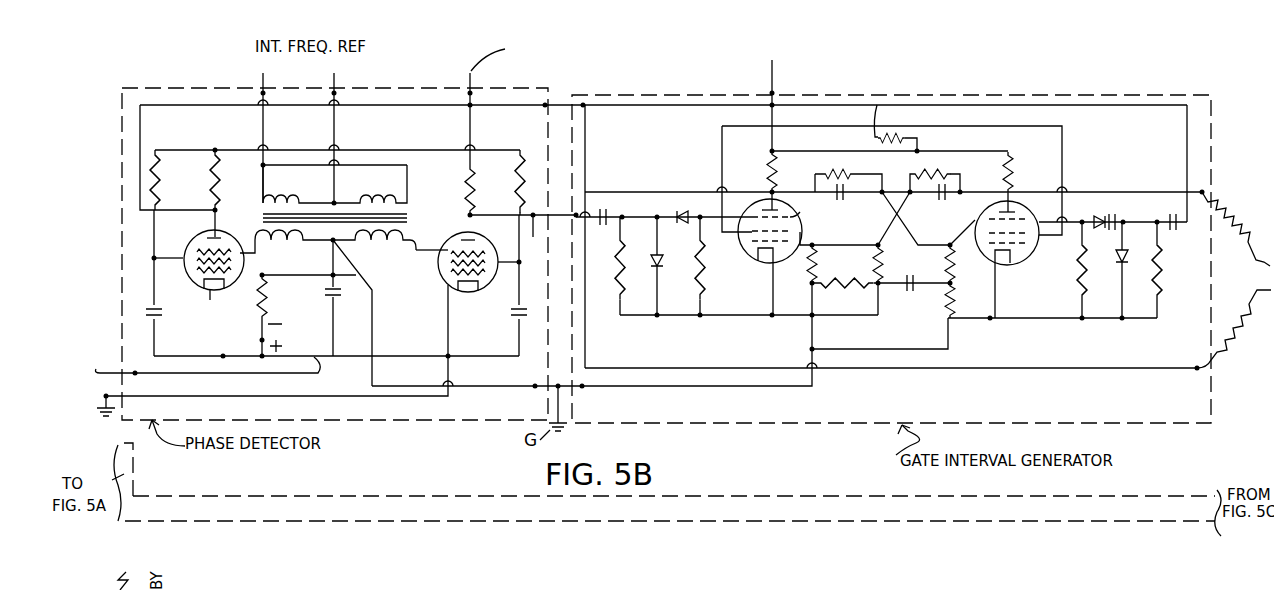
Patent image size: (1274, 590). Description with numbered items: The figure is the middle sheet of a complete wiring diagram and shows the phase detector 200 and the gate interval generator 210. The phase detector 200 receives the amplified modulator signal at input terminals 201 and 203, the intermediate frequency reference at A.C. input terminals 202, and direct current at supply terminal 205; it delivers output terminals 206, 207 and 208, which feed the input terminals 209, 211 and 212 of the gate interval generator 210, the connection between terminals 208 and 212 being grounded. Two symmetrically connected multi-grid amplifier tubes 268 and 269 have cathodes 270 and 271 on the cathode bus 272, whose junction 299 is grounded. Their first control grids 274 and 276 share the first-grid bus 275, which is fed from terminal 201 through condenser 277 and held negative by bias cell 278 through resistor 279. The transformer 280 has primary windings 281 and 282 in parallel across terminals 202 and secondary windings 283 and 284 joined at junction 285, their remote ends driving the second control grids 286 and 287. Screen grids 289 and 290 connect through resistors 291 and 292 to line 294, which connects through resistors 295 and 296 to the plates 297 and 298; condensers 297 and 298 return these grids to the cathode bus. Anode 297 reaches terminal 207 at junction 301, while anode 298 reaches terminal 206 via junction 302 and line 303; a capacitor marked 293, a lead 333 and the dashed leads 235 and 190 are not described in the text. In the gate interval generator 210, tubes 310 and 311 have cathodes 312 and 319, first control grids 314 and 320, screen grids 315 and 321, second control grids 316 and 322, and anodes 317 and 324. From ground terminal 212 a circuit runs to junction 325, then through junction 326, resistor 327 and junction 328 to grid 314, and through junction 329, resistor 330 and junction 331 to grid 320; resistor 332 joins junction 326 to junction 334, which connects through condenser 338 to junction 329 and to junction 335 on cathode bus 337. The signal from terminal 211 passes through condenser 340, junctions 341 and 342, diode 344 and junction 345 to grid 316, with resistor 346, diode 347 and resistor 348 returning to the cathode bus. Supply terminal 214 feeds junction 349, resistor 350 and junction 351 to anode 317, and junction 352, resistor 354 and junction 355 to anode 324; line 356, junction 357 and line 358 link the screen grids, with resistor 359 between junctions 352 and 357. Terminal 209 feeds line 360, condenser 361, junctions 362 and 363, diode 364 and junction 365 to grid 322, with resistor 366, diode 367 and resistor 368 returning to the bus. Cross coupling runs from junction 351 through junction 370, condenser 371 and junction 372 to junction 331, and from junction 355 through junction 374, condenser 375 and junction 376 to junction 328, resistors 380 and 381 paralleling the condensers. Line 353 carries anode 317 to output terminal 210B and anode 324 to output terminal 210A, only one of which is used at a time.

The phase detector 200 is at (457, 425).
The gate interval generator 210 is at (637, 425).
The input terminal 201 is at (138, 375).
The input terminal 203 is at (148, 396).
The A.C. input terminals 202 is at (265, 82).
The supply terminal 205 is at (473, 92).
The alternate output terminal 206 is at (544, 108).
The output terminal 207 is at (540, 232).
The output terminal 208 is at (536, 388).
The input terminal 209 is at (586, 110).
The signal input terminal 211 is at (599, 230).
The ground terminal 212 is at (584, 388).
The supply terminal 214 is at (770, 92).
The multi-grid amplifier tube 268 is at (180, 308).
The multi-grid amplifier tube 269 is at (452, 286).
The cathode 270 is at (204, 286).
The cathode 271 is at (466, 289).
The cathode bus 272 is at (320, 358).
The first control grid 274 is at (228, 276).
The first-grid bus 275 is at (306, 316).
The control grid 276 is at (440, 278).
The condenser 277 is at (347, 315).
The bias cell 278 is at (260, 340).
The resistor 279 is at (260, 318).
The transformer 280 is at (406, 218).
The primary winding 281 is at (378, 193).
The primary winding 282 is at (302, 193).
The secondary winding 283 is at (374, 246).
The secondary winding 284 is at (294, 246).
The junction 285 is at (347, 312).
The second control grid 286 is at (440, 254).
The second control grid 287 is at (232, 252).
The screen grid 289 is at (490, 278).
The screen grid 290 is at (196, 248).
The resistor 291 is at (520, 208).
The resistor 292 is at (160, 176).
The capacitor 293 is at (139, 328).
The line 294 is at (242, 150).
The resistor 295 is at (474, 184).
The resistor 296 is at (220, 188).
The anode 297 is at (482, 248).
The anode 298 is at (218, 232).
The junction 299 is at (446, 358).
The junction 301 is at (468, 218).
The junction 302 is at (213, 212).
The line 303 is at (140, 146).
The multiple-grid tube 310 is at (750, 270).
The multiple-grid tube 311 is at (1008, 276).
The cathode 312 is at (759, 272).
The first control grid 314 is at (752, 258).
The screen grid 315 is at (796, 282).
The second control grid 316 is at (813, 216).
The anode 317 is at (762, 214).
The cathode 319 is at (1006, 256).
The first control grid 320 is at (1034, 236).
The screen grid 321 is at (946, 232).
The second control grid 322 is at (958, 216).
The anode 324 is at (1010, 210).
The junction 325 is at (812, 350).
The junction 326 is at (796, 303).
The resistor 327 is at (832, 264).
The junction 328 is at (816, 246).
The junction 329 is at (965, 300).
The resistor 330 is at (961, 265).
The junction 331 is at (928, 220).
The resistor 332 is at (845, 295).
The ground lead 333 is at (894, 370).
The junction 334 is at (890, 270).
The junction 335 is at (866, 318).
The cathode bus 337 is at (668, 314).
The condenser 338 is at (908, 295).
The condenser 340 is at (596, 192).
The junction 341 is at (624, 212).
The junction 342 is at (662, 246).
The diode 344 is at (680, 210).
The junction 345 is at (702, 212).
The resistor 346 is at (618, 296).
The diode 347 is at (636, 299).
The resistor 348 is at (681, 266).
The junction 349 is at (774, 152).
The resistor 350 is at (750, 180).
The junction 351 is at (770, 192).
The junction 352 is at (916, 152).
The line 353 is at (1062, 192).
The resistor 354 is at (986, 172).
The junction 355 is at (1010, 200).
The line 356 is at (722, 138).
The junction 357 is at (876, 120).
The line 358 is at (968, 126).
The resistor 359 is at (910, 138).
The line 360 is at (1080, 108).
The condenser 361 is at (1172, 230).
The junction 362 is at (1157, 206).
The junction 363 is at (1131, 216).
The diode 364 is at (1102, 214).
The junction 365 is at (1082, 218).
The resistor 366 is at (1170, 270).
The diode 367 is at (1132, 270).
The resistor 368 is at (1070, 278).
The junction 370 is at (814, 192).
The condenser 371 is at (857, 192).
The junction 372 is at (887, 218).
The junction 374 is at (968, 192).
The condenser 375 is at (916, 212).
The junction 376 is at (910, 192).
The resistor 380 is at (848, 174).
The resistor 381 is at (933, 185).
The output terminal 210A is at (1200, 192).
The output terminal 210B is at (1196, 368).
The lead to FIG. 5A 235 is at (976, 498).
The lead 190 and ground 190 is at (994, 536).